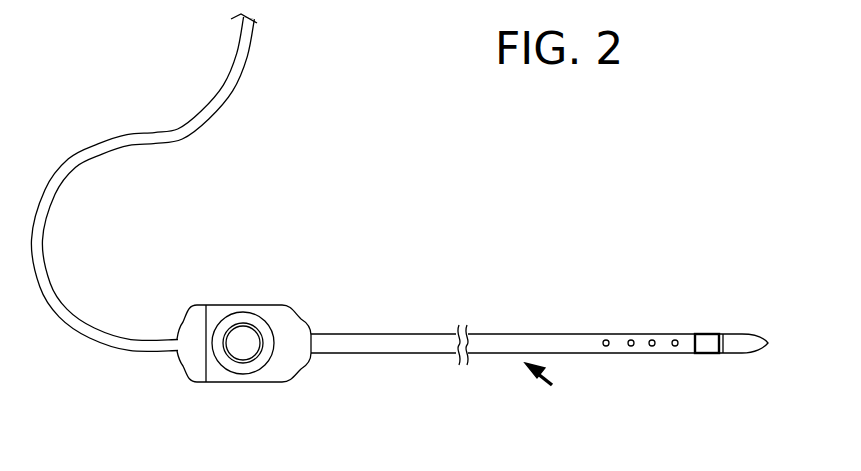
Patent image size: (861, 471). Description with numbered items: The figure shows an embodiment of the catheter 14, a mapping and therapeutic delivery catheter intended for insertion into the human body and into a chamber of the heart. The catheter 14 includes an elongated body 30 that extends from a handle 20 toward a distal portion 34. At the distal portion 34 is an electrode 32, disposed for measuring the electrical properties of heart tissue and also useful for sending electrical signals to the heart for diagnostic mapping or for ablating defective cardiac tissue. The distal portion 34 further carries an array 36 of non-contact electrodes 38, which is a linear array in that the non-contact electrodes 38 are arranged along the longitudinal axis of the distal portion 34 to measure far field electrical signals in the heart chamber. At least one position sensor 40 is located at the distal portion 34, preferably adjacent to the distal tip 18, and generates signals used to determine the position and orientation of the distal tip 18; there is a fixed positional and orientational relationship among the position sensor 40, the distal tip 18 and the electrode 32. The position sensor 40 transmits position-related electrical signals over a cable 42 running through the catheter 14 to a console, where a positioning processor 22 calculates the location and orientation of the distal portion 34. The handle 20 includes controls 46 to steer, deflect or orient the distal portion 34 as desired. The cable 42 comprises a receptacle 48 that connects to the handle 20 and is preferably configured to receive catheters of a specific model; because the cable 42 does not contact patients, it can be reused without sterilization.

The catheter 14 is at (448, 280).
The distal tip 18 is at (770, 342).
The handle 20 is at (250, 383).
The positioning processor 22 is at (523, 332).
The body 30 is at (550, 380).
The electrode 32 is at (742, 354).
The distal portion 34 is at (687, 280).
The array 36 is at (632, 377).
The non-contact electrodes 38 is at (631, 340).
The position sensor 40 is at (716, 312).
The cable 42 is at (186, 128).
The controls 46 is at (250, 311).
The receptacle 48 is at (188, 310).